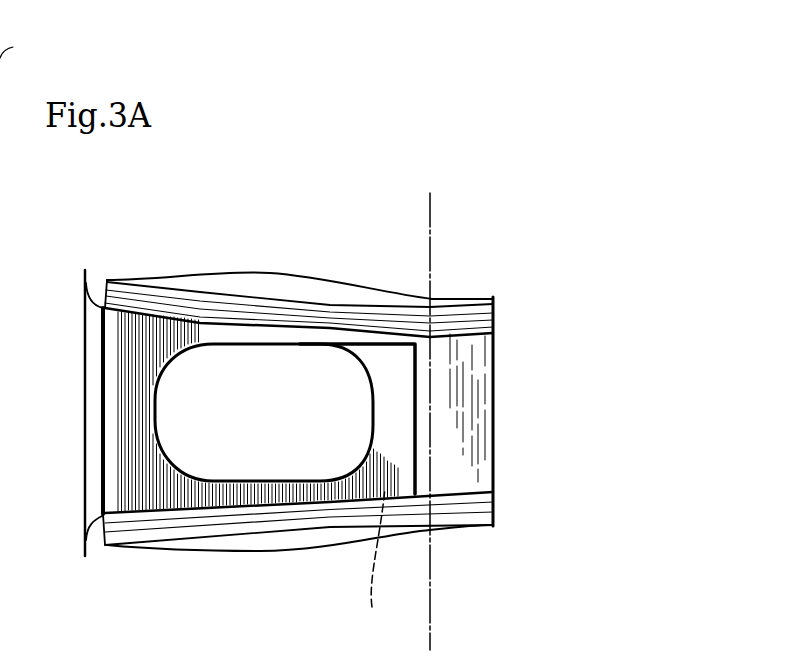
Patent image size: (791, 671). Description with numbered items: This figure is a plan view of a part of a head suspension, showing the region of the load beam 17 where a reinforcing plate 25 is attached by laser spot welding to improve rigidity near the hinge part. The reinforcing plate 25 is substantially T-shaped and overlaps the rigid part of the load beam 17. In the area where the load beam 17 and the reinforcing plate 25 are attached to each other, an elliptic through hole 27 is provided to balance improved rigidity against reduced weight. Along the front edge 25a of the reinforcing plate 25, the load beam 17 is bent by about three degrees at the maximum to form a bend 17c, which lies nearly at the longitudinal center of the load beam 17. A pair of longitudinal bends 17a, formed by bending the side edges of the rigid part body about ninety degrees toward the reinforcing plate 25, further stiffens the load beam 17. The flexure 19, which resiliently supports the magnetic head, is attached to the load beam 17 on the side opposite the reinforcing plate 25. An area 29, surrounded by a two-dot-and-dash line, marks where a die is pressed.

The load beam 17 is at (476, 397).
The longitudinal bend 17a is at (493, 313).
The bend 17c is at (434, 535).
The flexure 19 is at (493, 519).
The reinforcing plate 25 is at (141, 332).
The front edge of the reinforcing plate 25a is at (432, 338).
The elliptic through hole 27 is at (310, 360).
The area to which a die is pressed 29 is at (371, 563).